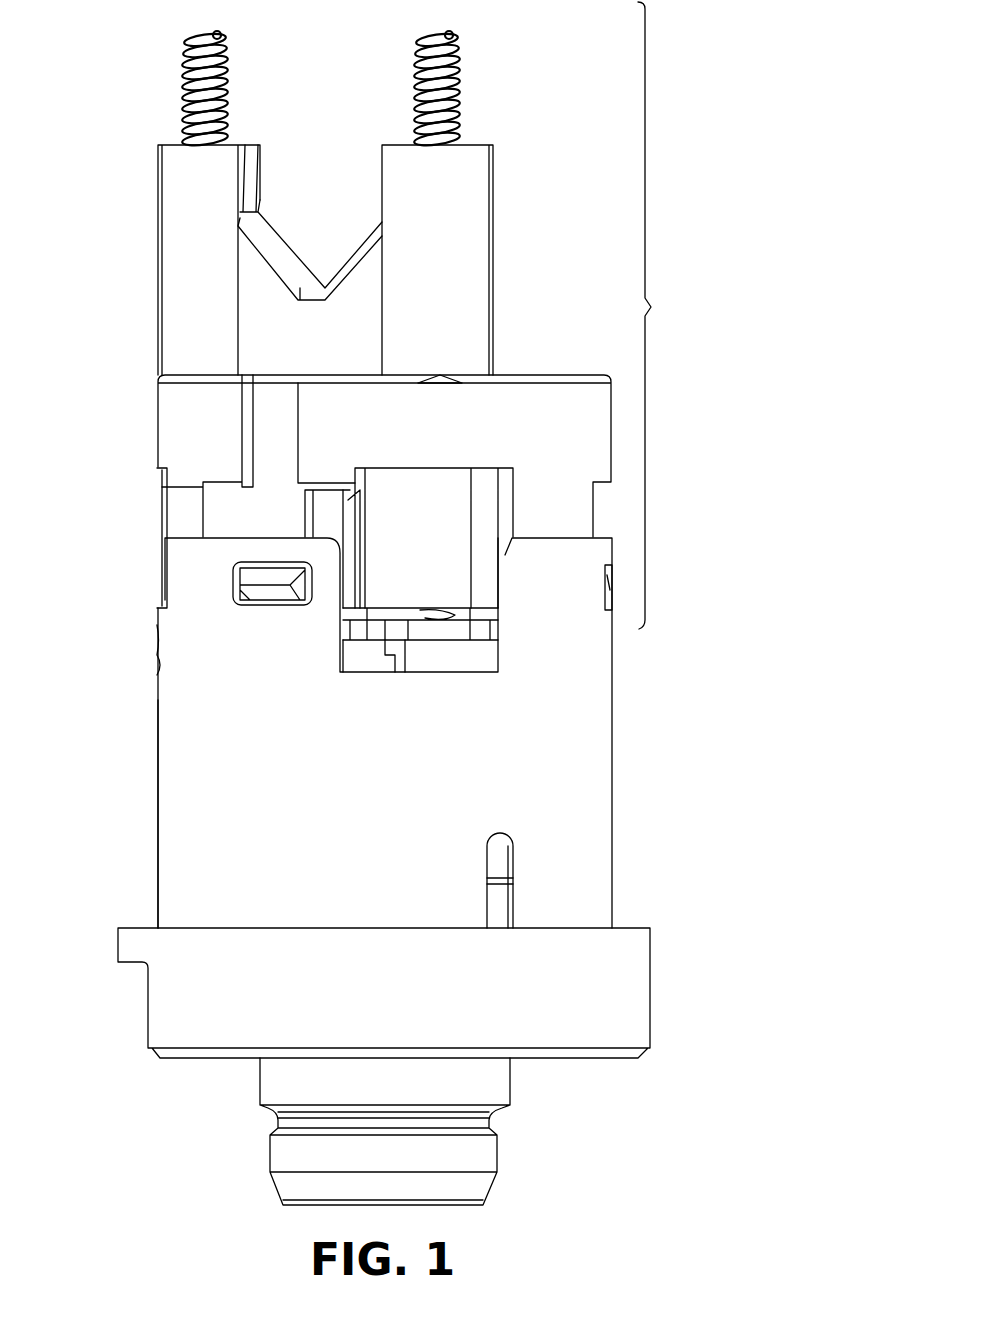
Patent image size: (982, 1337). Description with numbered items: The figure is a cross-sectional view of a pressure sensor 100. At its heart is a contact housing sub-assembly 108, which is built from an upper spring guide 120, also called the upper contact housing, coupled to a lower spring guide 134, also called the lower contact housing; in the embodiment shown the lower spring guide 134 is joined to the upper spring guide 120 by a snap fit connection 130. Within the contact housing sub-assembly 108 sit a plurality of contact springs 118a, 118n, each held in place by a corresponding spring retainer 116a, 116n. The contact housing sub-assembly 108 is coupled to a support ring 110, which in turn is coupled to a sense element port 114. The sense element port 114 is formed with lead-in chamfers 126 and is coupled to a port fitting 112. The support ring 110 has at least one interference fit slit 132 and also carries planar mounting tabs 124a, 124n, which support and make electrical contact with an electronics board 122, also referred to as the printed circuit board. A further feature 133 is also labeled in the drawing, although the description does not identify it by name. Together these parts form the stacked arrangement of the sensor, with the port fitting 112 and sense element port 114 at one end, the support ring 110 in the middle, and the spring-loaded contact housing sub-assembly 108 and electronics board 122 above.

The pressure sensor 100 is at (718, 156).
The contact housing sub-assembly 108 is at (673, 315).
The support ring 110 is at (401, 758).
The port fitting 112 is at (530, 1173).
The sense element port 114 is at (401, 1015).
The spring retainer 116a is at (226, 295).
The spring retainer 116n is at (469, 295).
The contact spring 118a is at (183, 62).
The contact spring 118n is at (460, 58).
The upper spring guide 120 is at (335, 340).
The electronics board 122 is at (470, 631).
The planar mounting tab 124a is at (155, 658).
The planar mounting tab 124n is at (453, 650).
The lead-in chamfers 126 is at (512, 882).
The snap fit connection 130 is at (283, 583).
The interference fit slit 132 is at (490, 843).
The side wall 133 is at (160, 868).
The lower spring guide 134 is at (478, 573).